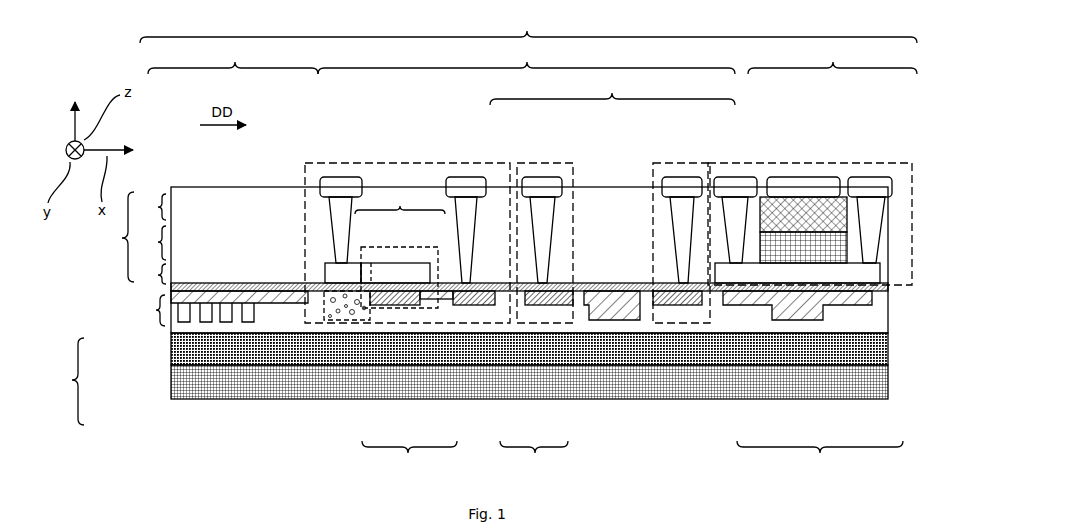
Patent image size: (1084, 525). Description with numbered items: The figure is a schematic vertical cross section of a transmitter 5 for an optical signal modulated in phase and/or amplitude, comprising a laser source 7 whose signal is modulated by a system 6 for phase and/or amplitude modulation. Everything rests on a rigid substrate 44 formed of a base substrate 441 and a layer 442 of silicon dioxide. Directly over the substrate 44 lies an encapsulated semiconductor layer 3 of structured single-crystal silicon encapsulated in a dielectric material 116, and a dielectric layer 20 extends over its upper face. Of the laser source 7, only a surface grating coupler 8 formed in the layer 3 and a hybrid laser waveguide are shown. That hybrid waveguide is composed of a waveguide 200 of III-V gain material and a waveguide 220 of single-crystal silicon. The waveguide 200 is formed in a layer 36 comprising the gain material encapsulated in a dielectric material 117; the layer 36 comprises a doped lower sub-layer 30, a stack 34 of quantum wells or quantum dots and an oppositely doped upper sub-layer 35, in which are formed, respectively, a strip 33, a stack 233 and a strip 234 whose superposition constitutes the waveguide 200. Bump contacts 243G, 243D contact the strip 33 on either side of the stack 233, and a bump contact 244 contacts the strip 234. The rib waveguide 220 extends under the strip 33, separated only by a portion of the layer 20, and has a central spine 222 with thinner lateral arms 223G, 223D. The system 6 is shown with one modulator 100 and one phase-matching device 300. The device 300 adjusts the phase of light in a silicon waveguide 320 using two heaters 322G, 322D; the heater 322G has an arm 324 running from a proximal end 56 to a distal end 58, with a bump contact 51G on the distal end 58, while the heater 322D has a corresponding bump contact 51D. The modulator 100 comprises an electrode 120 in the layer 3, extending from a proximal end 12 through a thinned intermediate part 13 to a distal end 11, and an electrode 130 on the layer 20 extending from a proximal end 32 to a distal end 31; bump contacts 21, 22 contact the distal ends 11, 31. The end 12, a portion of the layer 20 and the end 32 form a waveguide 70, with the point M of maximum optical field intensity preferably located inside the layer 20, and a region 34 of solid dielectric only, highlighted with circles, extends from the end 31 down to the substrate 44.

The transmitter 5 is at (528, 25).
The system for phase and/or amplitude modulation 6 is at (526, 57).
The laser source 7 is at (532, 57).
The phase-matching device 300 is at (612, 90).
The bump contact 22 is at (342, 177).
The modulator 100 is at (381, 166).
The bump contact 21 is at (468, 177).
The bump contact 51G is at (533, 174).
The heater 322G is at (557, 161).
The bump contact 51D is at (679, 174).
The heater 322D is at (699, 161).
The bump contact 243G is at (745, 174).
The waveguide 200 is at (811, 161).
The bump contact 243D is at (865, 174).
The surface grating coupler 8 is at (233, 297).
The dielectric material 117 is at (290, 210).
The electrode 130 is at (400, 202).
The waveguide 70 is at (401, 245).
The distal end 31 is at (350, 278).
The proximal end 32 is at (412, 270).
The upper sub-layer 35 is at (150, 207).
The stack of quantum wells or quantum dots 34 is at (302, 441).
The lower sub-layer 30 is at (150, 274).
The layer 36 is at (118, 237).
The dielectric layer 20 is at (172, 287).
The encapsulated semiconductor layer 3 is at (156, 310).
The bump contact 244 is at (803, 187).
The strip 234 is at (803, 214).
The stack 233 is at (803, 247).
The strip 33 is at (797, 273).
The layer of dielectric material 442 is at (168, 345).
The base substrate 441 is at (168, 385).
The rigid substrate 44 is at (66, 381).
The dielectric material 116 is at (262, 320).
The point of maximum optical field intensity M is at (393, 288).
The proximal end 12 is at (403, 299).
The thinned intermediate part 13 is at (440, 297).
The distal end 11 is at (472, 299).
The electrode 120 is at (409, 459).
The distal end 58 is at (540, 299).
The proximal end 56 is at (568, 299).
The arm 324 is at (605, 320).
The waveguide 320 is at (610, 313).
The lateral arm 223G is at (745, 299).
The central spine 222 is at (800, 316).
The lateral arm 223D is at (848, 299).
The waveguide 220 is at (813, 386).